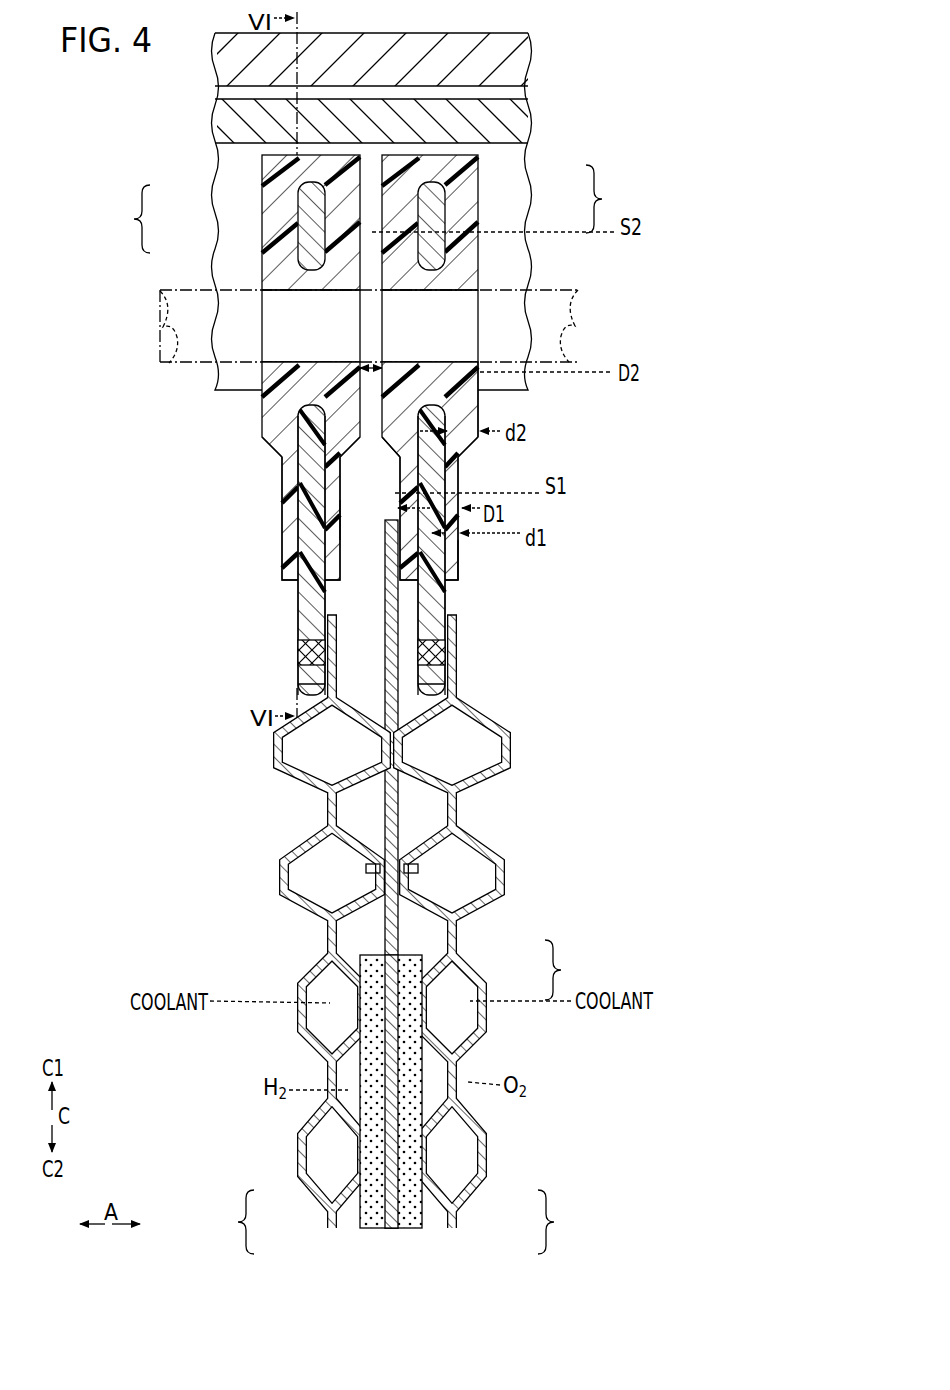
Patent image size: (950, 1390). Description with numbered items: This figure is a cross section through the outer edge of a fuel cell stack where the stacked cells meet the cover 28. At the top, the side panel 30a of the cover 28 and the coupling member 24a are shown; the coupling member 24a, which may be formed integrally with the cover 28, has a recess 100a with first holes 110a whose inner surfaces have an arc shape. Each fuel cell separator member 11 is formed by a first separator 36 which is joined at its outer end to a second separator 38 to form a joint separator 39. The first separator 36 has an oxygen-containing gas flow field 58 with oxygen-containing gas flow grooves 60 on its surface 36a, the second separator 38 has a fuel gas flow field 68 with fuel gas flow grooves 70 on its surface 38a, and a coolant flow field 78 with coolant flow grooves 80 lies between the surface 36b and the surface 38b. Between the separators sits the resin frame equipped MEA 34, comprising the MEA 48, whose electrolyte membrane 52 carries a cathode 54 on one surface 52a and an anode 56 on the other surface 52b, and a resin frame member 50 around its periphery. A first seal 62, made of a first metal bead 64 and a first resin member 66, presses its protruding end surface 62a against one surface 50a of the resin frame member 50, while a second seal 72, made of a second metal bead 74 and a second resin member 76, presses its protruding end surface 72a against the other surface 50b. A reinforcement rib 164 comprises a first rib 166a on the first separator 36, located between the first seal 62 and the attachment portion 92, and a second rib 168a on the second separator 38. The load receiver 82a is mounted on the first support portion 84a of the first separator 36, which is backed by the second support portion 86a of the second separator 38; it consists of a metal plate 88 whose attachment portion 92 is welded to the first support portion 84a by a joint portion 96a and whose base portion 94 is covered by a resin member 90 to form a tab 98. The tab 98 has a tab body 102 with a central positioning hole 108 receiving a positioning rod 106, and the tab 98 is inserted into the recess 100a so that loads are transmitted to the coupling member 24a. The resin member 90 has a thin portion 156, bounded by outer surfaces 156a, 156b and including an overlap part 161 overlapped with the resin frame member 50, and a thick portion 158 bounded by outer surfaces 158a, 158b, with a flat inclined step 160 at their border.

The cover 28 is at (540, 36).
The side panel 30a is at (510, 72).
The coupling member 24a is at (512, 109).
The load receiver 82a is at (258, 168).
The resin member 90 is at (296, 208).
The base portion 94 is at (300, 238).
The tab 98 is at (358, 209).
The metal plate 88 is at (296, 258).
The tab body 102 is at (262, 278).
The rod 106 is at (578, 318).
The positioning hole 108 is at (324, 292).
The recess 100a is at (232, 378).
The first hole 110a is at (272, 398).
The thick portion 158 is at (276, 422).
The one outer surface of the thick portion 158a is at (468, 420).
The other outer surface of the thick portion 158b is at (370, 447).
The step 160 is at (286, 452).
The thin portion 156 is at (282, 555).
The one outer surface of the thin portion 156a is at (462, 571).
The other outer surface of the thin portion 156b is at (340, 500).
The overlap part 161 is at (387, 555).
The fuel cell separator member 11 is at (466, 617).
The attachment portion 92 is at (310, 622).
The joint portion 96a is at (300, 655).
The second support portion 86a is at (326, 671).
The first support portion 84a is at (326, 703).
The second rib 168a is at (280, 742).
The reinforcement rib 164 is at (413, 761).
The first rib 166a is at (284, 762).
The second metal bead 74 is at (320, 825).
The first metal bead 64 is at (458, 824).
The first seal 62 is at (448, 856).
The protruding end surface of the first seal 62a is at (366, 870).
The protruding end surface of the second seal 72a is at (450, 896).
The second seal 72 is at (328, 896).
The first resin member 66 is at (462, 912).
The second resin member 76 is at (378, 905).
The resin frame member 50 is at (400, 960).
The membrane electrode assembly 48 is at (420, 966).
The resin frame equipped MEA 34 is at (561, 970).
The one surface of the resin frame member 50a is at (400, 946).
The other surface of the resin frame member 50b is at (384, 951).
The coolant flow field 78 is at (330, 1032).
The coolant flow grooves 80 is at (400, 1044).
The one surface of the electrolyte membrane 52a is at (428, 1022).
The other surface of the electrolyte membrane 52b is at (360, 1020).
The electrolyte membrane 52 is at (395, 1048).
The cathode 54 is at (440, 1072).
The anode 56 is at (345, 1078).
The oxygen-containing gas flow field 58 is at (446, 1100).
The oxygen-containing gas flow grooves 60 is at (536, 1090).
The fuel gas flow field 68 is at (340, 1103).
The fuel gas flow grooves 70 is at (257, 1091).
The surface of the first separator 36a is at (460, 1142).
The surface of the first separator 36b is at (440, 1165).
The surface of the second separator 38a is at (355, 1148).
The surface of the second separator 38b is at (340, 1165).
The first separator 36 is at (322, 1210).
The second separator 38 is at (341, 1226).
The joint separator 39 is at (396, 1222).